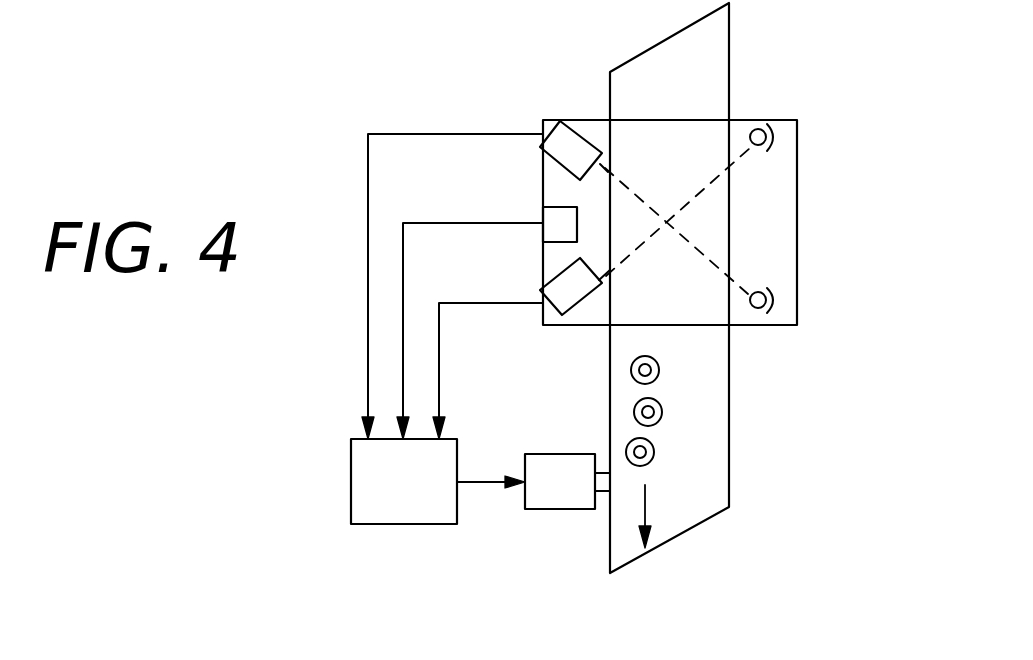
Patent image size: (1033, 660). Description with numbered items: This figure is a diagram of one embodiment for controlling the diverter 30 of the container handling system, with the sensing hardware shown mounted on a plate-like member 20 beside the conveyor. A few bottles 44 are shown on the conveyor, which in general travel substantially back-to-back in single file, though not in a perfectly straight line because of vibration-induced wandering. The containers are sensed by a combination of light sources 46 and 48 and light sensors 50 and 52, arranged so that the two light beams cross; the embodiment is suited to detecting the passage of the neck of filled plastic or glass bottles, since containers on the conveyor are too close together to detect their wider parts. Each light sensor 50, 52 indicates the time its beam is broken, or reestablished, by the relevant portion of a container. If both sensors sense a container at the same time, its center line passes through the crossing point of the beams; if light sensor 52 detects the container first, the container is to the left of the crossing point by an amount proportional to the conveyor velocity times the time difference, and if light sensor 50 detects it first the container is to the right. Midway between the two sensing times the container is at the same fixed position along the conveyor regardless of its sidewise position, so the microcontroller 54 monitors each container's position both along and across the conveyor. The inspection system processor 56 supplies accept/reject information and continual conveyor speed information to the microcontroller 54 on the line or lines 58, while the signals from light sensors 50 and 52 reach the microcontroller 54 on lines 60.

The document/card transport plate 20 is at (812, 210).
The diverter 30 is at (554, 468).
The bottles 44 is at (660, 372).
The light source 46 is at (777, 132).
The light source 48 is at (777, 300).
The light sensor 50 is at (575, 296).
The light sensor 52 is at (568, 142).
The microcontroller 54 is at (395, 510).
The inspection system processor 56 is at (558, 215).
The line or lines 58 is at (414, 226).
The lines 60 is at (368, 363).